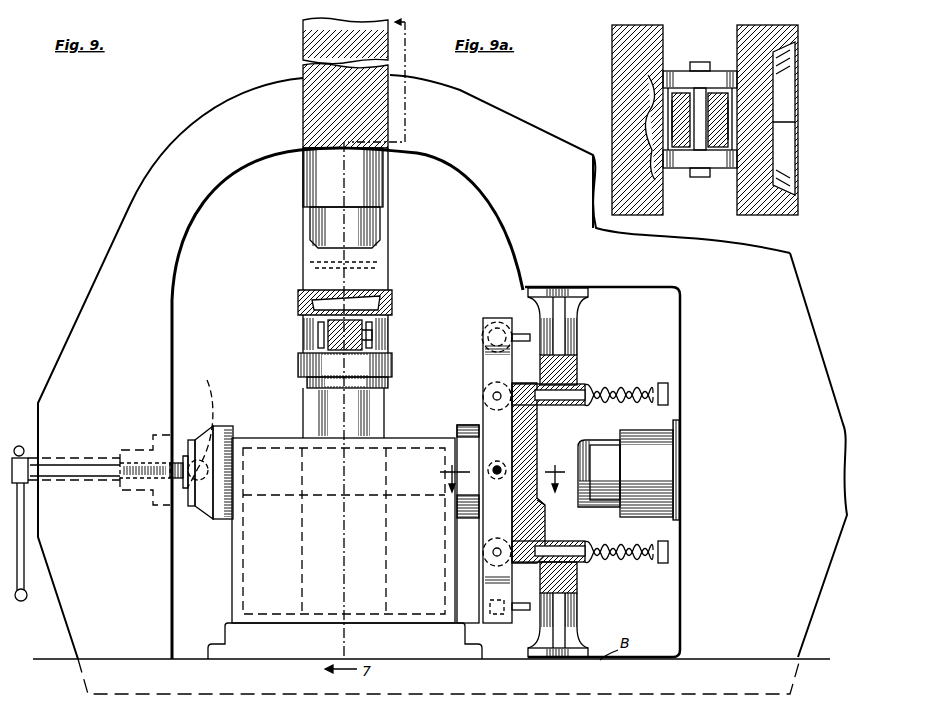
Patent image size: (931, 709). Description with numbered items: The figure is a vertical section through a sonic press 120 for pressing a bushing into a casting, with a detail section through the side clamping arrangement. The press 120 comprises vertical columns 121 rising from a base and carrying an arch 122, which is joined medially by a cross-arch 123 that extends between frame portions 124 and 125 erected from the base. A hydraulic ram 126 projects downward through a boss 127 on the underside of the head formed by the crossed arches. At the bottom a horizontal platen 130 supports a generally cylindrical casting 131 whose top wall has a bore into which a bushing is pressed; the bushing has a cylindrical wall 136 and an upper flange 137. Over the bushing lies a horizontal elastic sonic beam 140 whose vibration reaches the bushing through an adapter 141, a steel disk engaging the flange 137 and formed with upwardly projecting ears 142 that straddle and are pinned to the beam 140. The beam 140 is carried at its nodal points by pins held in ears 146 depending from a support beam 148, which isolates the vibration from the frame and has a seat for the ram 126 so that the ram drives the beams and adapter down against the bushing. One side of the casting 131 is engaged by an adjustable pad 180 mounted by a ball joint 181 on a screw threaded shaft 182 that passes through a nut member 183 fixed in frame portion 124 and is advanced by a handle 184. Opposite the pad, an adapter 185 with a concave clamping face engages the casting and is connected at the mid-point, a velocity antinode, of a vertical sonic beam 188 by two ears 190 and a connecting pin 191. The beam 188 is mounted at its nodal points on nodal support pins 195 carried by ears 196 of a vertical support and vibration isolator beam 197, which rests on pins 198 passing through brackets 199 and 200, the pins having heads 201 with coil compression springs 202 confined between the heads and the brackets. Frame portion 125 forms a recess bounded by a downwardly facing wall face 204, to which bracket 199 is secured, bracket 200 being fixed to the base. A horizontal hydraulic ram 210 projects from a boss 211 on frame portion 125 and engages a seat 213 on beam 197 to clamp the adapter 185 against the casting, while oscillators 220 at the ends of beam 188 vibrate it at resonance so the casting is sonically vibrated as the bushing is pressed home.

In FIG. 9, the press 120 is at (130, 199).
In FIG. 9, the vertical legs or columns 121 is at (385, 233).
In FIG. 9, the arch 122 is at (305, 76).
In FIG. 9, the cross-arch 123 is at (414, 100).
In FIG. 9, the frame portion 124 is at (108, 278).
In FIG. 9, the frame portion 125 is at (785, 262).
In FIG. 9, the hydraulic ram 126 is at (319, 227).
In FIG. 9, the boss 127 is at (330, 180).
In FIG. 9, the horizontal platen 130 is at (232, 636).
In FIG. 9, the casting or machine part 131 is at (440, 436).
In FIG. 9, the cylindrical wall 136 is at (325, 428).
In FIG. 9, the flange 137 is at (307, 383).
In FIG. 9, the sonic beam 140 is at (372, 338).
In FIG. 9, the adapter 141 is at (303, 365).
In FIG. 9, the ears 142 is at (325, 348).
In FIG. 9, the ears 146 is at (305, 322).
In FIG. 9, the support beam 148 is at (392, 296).
In FIG. 9, the adjustable pad 180 is at (218, 428).
In FIG. 9, the ball joint 181 is at (195, 433).
In FIG. 9, the screw threaded shaft 182 is at (182, 482).
In FIG. 9, the nut member 183 is at (135, 500).
In FIG. 9, the handle 184 is at (28, 578).
In FIG. 9, the adapter 185 is at (462, 506).
In FIG. 9a, the adapter 185 is at (625, 88).
In FIG. 9, the sonic beam 188 is at (490, 371).
In FIG. 9a, the sonic beam 188 is at (690, 150).
In FIG. 9, the ears 190 is at (495, 479).
In FIG. 9a, the ears 190 is at (683, 70).
In FIG. 9, the connecting pin 191 is at (497, 460).
In FIG. 9, the nodal support pins 195 is at (495, 396).
In FIG. 9, the ears 196 is at (490, 407).
In FIG. 9a, the ears 196 is at (728, 75).
In FIG. 9, the support and vibration isolator beam 197 is at (537, 420).
In FIG. 9a, the support and vibration isolator beam 197 is at (798, 40).
In FIG. 9, the pins 198 is at (575, 375).
In FIG. 9, the bracket 199 is at (575, 405).
In FIG. 9, the bracket 200 is at (578, 585).
In FIG. 9, the heads 201 is at (663, 383).
In FIG. 9, the coil compression springs 202 is at (598, 385).
In FIG. 9, the wall face 204 is at (625, 292).
In FIG. 9, the hydraulic ram 210 is at (600, 508).
In FIG. 9, the boss 211 is at (665, 515).
In FIG. 9, the seat 213 is at (545, 505).
In FIG. 9a, the seat 213 is at (798, 180).
In FIG. 9, the sonic vibration generators or oscillators 220 is at (480, 318).